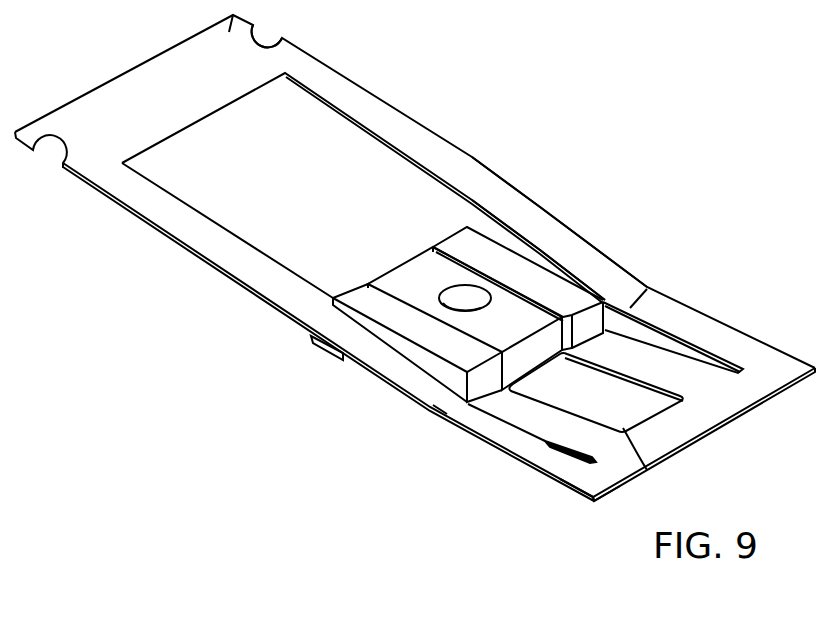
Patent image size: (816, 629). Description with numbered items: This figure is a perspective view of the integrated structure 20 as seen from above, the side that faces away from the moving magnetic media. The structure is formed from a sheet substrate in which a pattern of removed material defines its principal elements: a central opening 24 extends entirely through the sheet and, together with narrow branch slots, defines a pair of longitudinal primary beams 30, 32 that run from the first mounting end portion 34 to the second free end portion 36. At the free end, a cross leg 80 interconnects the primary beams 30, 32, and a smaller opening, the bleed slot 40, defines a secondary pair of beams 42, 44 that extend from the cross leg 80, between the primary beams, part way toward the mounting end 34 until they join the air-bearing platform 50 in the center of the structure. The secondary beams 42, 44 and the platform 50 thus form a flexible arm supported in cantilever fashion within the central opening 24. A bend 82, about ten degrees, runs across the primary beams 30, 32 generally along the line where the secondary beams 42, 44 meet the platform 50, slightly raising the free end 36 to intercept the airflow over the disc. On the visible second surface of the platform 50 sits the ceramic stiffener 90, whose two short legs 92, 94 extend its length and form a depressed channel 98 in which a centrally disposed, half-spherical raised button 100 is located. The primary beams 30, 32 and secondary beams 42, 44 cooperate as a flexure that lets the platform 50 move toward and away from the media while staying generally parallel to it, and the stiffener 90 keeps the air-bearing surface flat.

The integrated structure 20 is at (415, 264).
The central opening 24 is at (415, 264).
The primary beam 30 is at (603, 272).
The primary beam 32 is at (465, 413).
The first mounting end portion 34 is at (234, 15).
The second free end portion 36 is at (588, 480).
The bleed slot 40 is at (647, 470).
The secondary beam 42 is at (673, 367).
The secondary beam 44 is at (520, 415).
The air-bearing platform 50 is at (325, 357).
The cross leg 80 is at (609, 391).
The bend 82 is at (647, 290).
The stiffener 90 is at (500, 237).
The leg 92 is at (603, 333).
The leg 94 is at (472, 355).
The depressed channel 98 is at (533, 297).
The raised button 100 is at (485, 328).